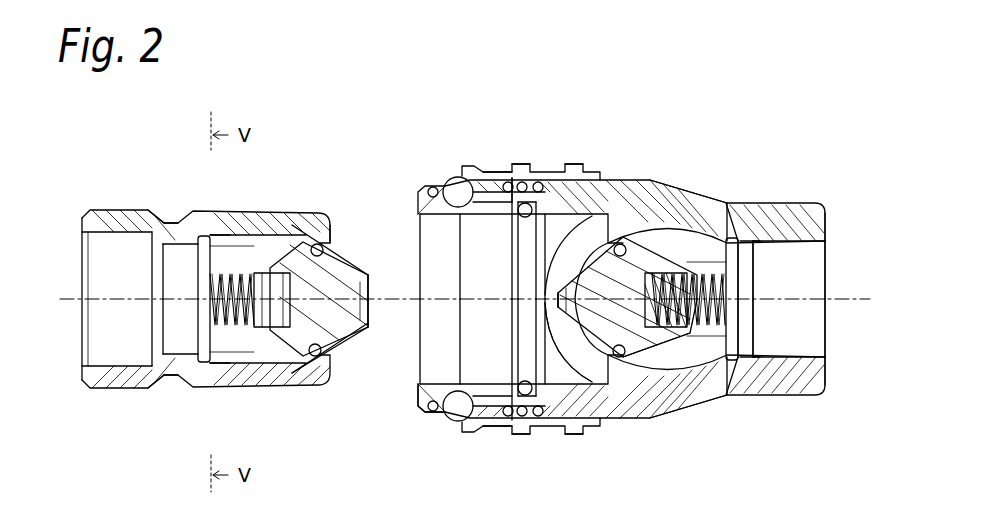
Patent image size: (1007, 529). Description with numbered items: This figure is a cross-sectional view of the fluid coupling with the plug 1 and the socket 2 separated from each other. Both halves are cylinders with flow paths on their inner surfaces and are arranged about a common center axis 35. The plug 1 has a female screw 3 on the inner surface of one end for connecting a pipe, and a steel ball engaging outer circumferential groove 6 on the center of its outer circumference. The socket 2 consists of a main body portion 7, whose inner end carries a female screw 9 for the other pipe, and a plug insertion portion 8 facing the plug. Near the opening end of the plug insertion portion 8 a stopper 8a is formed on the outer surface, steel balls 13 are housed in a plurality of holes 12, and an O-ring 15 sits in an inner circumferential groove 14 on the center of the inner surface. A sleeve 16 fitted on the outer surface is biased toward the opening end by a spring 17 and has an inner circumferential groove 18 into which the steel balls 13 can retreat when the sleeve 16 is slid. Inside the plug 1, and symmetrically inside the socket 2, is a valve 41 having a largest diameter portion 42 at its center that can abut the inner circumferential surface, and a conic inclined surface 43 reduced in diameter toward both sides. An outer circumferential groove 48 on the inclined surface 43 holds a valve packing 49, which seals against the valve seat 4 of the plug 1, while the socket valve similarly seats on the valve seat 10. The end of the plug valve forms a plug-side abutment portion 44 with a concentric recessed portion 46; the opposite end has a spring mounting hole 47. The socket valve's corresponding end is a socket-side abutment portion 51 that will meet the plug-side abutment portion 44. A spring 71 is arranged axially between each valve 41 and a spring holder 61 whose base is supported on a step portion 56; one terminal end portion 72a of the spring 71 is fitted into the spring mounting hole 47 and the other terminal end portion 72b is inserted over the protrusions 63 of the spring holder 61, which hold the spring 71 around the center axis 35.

The plug 1 is at (268, 200).
The socket 2 is at (620, 112).
The female screw 3 is at (95, 250).
The valve seat 4 is at (483, 330).
The steel ball engaging outer circumferential groove 6 is at (185, 212).
The main body portion 7 is at (662, 181).
The plug insertion portion 8 is at (612, 180).
The stopper 8a is at (437, 415).
The female screw 9 is at (784, 246).
The valve seat 10 is at (599, 400).
The holes 12 is at (428, 190).
The steel balls 13 is at (444, 186).
The inner circumferential groove 14 is at (519, 164).
The O-ring 15 is at (576, 180).
The sleeve 16 is at (485, 163).
The spring 17 is at (525, 181).
The inner circumferential groove 18 is at (459, 177).
The center axis 35 is at (829, 380).
The valve 41 is at (349, 350).
The largest diameter portion 42 is at (322, 258).
The conic inclined surface 43 is at (307, 243).
The plug-side abutment portion 44 is at (352, 268).
The recessed portion 46 is at (372, 292).
The spring mounting hole 47 is at (259, 330).
The outer circumferential groove 48 is at (291, 360).
The valve packing 49 is at (317, 358).
The socket-side abutment portion 51 is at (527, 420).
The step portion 56 is at (206, 224).
The spring holder 61 is at (181, 375).
The protrusions 63 is at (214, 236).
The spring 71 is at (256, 252).
The terminal end portion 72a is at (275, 362).
The terminal end portion 72b is at (204, 364).